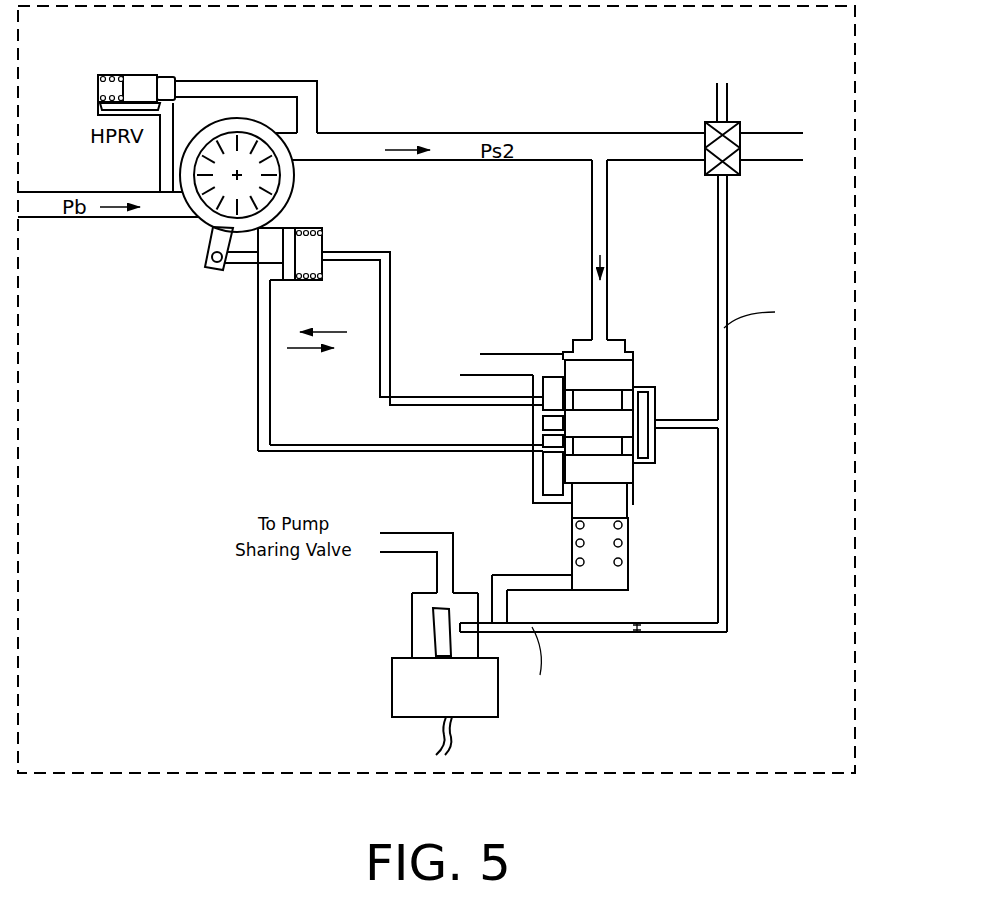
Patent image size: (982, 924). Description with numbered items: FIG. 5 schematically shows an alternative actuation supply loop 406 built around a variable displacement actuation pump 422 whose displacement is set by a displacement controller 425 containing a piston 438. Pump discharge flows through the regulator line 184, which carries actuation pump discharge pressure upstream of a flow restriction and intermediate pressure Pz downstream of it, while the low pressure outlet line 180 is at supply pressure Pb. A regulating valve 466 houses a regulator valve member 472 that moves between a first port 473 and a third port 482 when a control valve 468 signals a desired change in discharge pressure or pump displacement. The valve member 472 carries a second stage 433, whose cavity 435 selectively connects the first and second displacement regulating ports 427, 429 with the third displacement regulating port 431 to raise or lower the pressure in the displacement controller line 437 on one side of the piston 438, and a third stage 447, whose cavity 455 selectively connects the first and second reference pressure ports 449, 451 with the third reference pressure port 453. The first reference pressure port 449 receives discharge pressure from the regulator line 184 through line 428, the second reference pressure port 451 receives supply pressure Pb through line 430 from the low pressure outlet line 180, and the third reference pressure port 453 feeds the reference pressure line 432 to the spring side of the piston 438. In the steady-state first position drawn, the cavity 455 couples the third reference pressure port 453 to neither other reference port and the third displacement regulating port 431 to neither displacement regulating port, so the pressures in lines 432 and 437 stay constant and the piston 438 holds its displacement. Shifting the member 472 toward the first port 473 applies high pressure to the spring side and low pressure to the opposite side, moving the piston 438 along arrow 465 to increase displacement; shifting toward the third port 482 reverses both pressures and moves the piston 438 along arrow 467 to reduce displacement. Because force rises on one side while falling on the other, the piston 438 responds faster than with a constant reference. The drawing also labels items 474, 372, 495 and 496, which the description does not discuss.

The actuation supply loop 406 is at (705, 775).
The variable displacement actuation pump 422 is at (190, 252).
The displacement controller 425 is at (222, 283).
The piston 438 is at (287, 228).
The valve 474 is at (312, 228).
The reference pressure line 432 is at (392, 265).
The line 430 is at (500, 392).
The arrow 465 is at (333, 331).
The arrow 467 is at (305, 348).
The displacement controller line 437 is at (267, 417).
The low pressure outlet line 180 is at (500, 362).
The first port 473 is at (592, 295).
The regulator valve member 472 is at (610, 345).
The first reference pressure port 449 is at (615, 372).
The third reference pressure port 453 is at (562, 400).
The second reference pressure port 451 is at (543, 420).
The second displacement regulating port 429 is at (548, 440).
The third displacement regulating port 431 is at (560, 458).
The cavity 455 is at (652, 400).
The third stage 447 is at (668, 386).
The line 428 is at (658, 437).
The cavity 435 is at (640, 448).
The second stage 433 is at (660, 468).
The first displacement regulating port 427 is at (665, 472).
The regulating valve 466 is at (660, 530).
The regulator line 184 is at (728, 345).
The third port 482 is at (600, 578).
The housing 372 is at (628, 566).
The passage 495 is at (460, 623).
The lever arm 496 is at (433, 622).
The control valve 468 is at (386, 692).